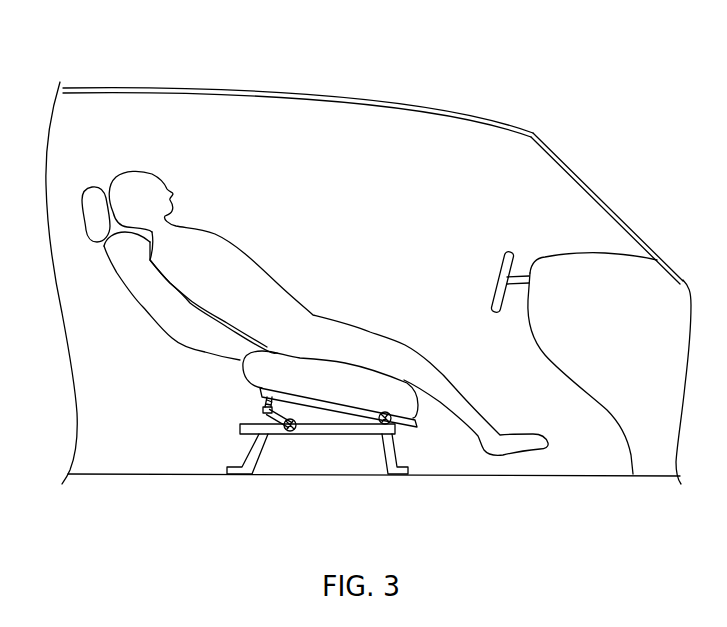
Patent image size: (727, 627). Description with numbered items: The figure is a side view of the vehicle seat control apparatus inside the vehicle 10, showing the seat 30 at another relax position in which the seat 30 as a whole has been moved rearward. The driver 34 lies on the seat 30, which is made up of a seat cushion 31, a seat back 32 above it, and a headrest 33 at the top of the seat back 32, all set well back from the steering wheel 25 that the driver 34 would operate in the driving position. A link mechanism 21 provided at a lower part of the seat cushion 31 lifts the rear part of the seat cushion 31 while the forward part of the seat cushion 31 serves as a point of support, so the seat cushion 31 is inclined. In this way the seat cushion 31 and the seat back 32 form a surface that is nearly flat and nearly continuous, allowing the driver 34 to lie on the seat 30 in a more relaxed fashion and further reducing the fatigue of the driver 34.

The vehicle 10 is at (265, 61).
The link mechanism 21 is at (277, 426).
The steering wheel 25 is at (510, 248).
The seat 30 is at (218, 307).
The seat cushion 31 is at (280, 376).
The seat back 32 is at (193, 341).
The headrest 33 is at (92, 222).
The driver 34 is at (158, 172).